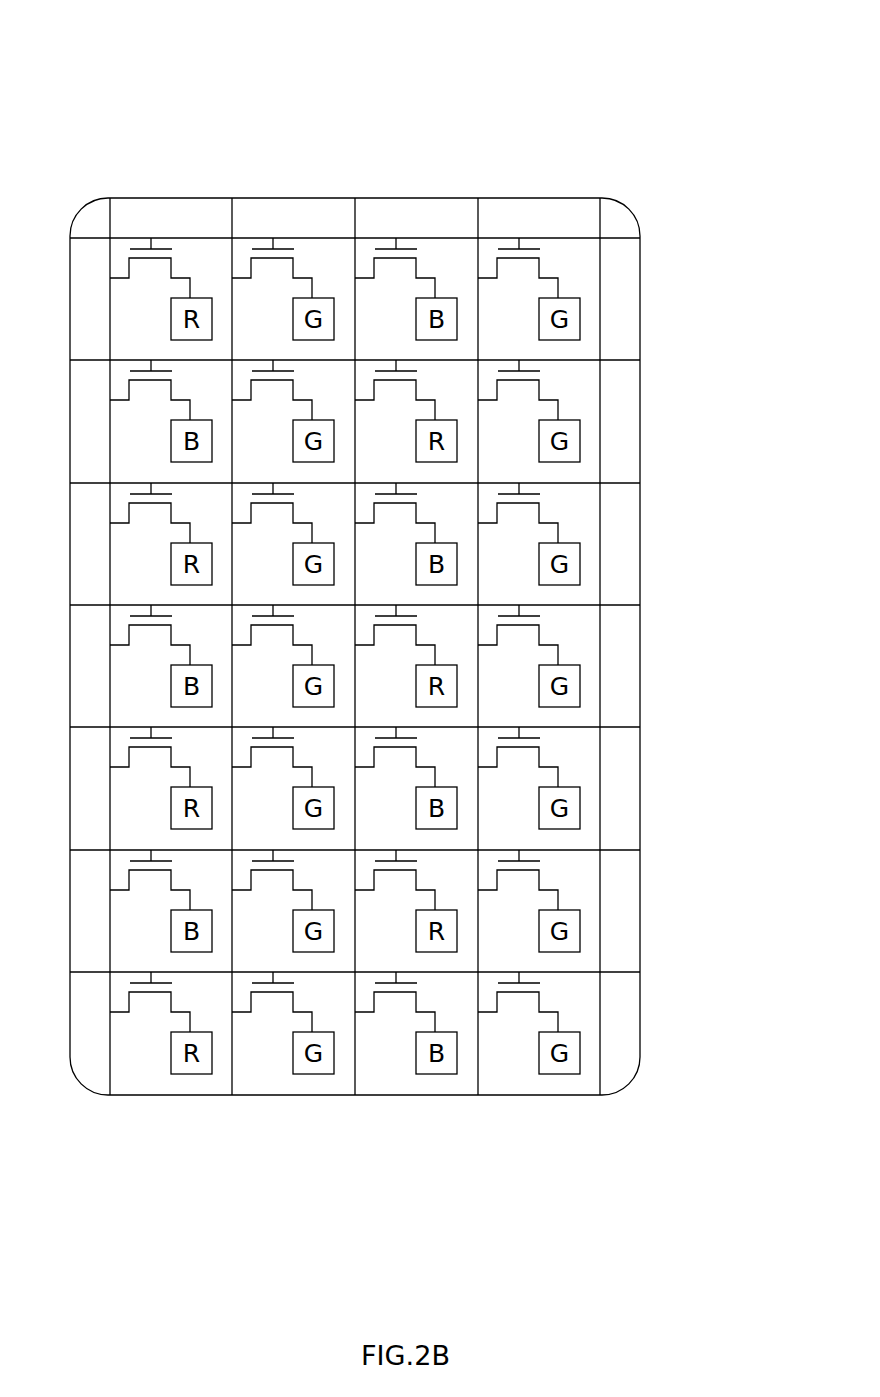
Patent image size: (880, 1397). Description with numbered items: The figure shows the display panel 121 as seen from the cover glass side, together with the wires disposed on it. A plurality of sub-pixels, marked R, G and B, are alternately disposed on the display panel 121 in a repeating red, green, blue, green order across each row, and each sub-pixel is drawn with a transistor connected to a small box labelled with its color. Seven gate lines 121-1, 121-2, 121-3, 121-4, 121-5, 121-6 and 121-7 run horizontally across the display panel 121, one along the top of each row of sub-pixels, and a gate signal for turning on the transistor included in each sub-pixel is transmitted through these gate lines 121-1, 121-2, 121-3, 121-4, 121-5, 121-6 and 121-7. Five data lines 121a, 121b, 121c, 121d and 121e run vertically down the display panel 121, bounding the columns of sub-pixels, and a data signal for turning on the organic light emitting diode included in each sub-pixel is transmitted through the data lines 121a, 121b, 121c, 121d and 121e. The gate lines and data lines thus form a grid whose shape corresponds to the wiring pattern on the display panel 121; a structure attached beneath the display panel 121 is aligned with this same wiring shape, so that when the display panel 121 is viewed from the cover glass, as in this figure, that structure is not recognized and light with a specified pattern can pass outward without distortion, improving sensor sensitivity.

The display panel 121 is at (494, 93).
The data line 121a is at (110, 198).
The data line 121b is at (232, 198).
The data line 121c is at (355, 198).
The data line 121d is at (478, 198).
The data line 121e is at (600, 198).
The gate line 121-1 is at (640, 238).
The gate line 121-2 is at (640, 360).
The gate line 121-3 is at (640, 483).
The gate line 121-4 is at (640, 605).
The gate line 121-5 is at (640, 727).
The gate line 121-6 is at (640, 850).
The gate line 121-7 is at (640, 972).